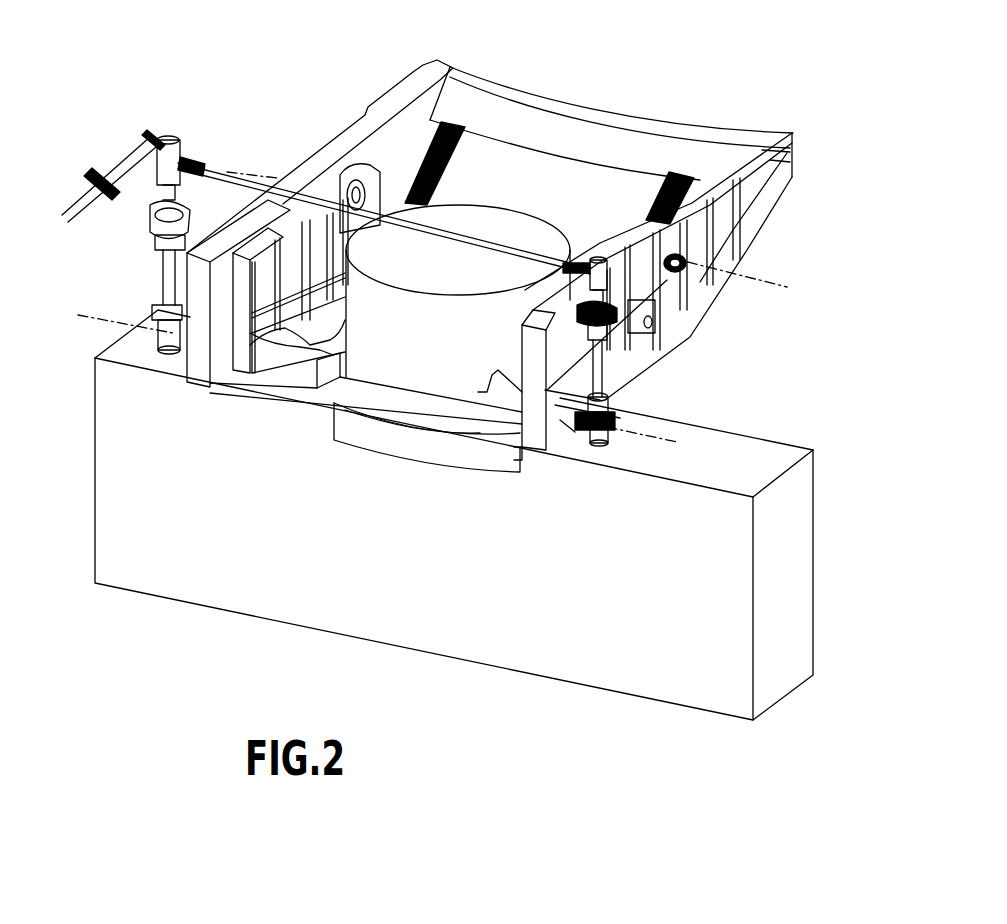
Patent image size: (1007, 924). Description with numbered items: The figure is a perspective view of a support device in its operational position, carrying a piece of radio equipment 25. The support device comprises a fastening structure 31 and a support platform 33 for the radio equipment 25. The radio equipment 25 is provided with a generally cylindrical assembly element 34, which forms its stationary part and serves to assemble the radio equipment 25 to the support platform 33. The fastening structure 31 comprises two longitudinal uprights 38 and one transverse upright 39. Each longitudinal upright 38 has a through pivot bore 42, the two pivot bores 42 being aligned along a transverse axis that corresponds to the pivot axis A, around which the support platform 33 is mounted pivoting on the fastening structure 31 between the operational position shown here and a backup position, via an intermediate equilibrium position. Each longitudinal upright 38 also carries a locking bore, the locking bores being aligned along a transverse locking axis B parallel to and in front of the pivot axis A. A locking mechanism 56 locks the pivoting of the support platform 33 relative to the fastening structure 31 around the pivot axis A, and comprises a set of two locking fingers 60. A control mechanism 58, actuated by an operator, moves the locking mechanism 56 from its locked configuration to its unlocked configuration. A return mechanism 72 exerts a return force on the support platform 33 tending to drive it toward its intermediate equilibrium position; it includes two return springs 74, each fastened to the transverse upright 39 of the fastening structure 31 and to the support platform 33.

The radio equipment 25 is at (215, 587).
The fastening structure 31 is at (745, 227).
The support platform 33 is at (278, 373).
The assembly element 34 is at (418, 358).
The longitudinal upright 38 is at (343, 140).
The transverse upright 39 is at (587, 123).
The pivot bore 42 is at (683, 272).
The locking mechanism 56 is at (613, 430).
The control mechanism 58 is at (128, 247).
The locking finger 60 is at (580, 423).
The return mechanism 72 is at (599, 112).
The return spring 74 is at (695, 62).
The pivot axis A is at (737, 282).
The locking axis B is at (652, 444).